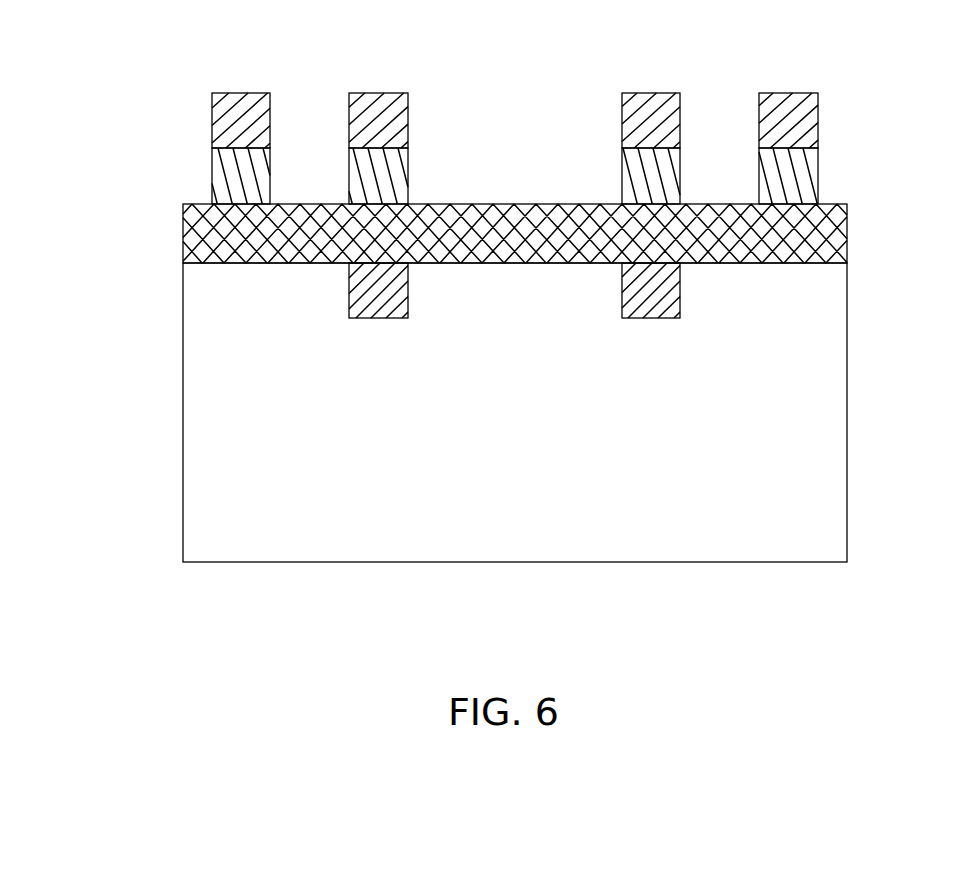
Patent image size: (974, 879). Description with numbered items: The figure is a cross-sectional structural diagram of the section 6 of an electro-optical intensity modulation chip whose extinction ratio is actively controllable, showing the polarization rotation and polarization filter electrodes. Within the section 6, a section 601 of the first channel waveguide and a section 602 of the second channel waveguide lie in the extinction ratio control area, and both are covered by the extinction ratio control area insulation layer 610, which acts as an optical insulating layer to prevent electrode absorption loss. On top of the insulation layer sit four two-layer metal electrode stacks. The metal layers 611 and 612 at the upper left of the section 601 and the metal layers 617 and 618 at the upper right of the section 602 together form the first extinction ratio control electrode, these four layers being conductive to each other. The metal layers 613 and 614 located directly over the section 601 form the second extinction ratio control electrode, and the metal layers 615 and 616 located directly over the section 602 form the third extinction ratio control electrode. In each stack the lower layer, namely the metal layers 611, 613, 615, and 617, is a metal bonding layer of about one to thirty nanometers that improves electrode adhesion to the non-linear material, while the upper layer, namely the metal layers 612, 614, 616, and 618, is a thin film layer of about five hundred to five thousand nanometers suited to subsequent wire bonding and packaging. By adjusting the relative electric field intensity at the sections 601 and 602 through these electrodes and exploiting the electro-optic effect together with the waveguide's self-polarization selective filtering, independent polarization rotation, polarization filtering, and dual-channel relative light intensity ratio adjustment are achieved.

The section 6 is at (812, 452).
The extinction ratio control area insulation layer 610 is at (813, 240).
The section of the first channel waveguide 601 is at (370, 293).
The section of the second channel waveguide 602 is at (668, 299).
The metal bonding layer 611 is at (221, 172).
The thin film layer 612 is at (222, 118).
The metal bonding layer 613 is at (402, 174).
The thin film layer 614 is at (378, 108).
The metal bonding layer 615 is at (632, 178).
The thin film layer 616 is at (653, 110).
The metal bonding layer 617 is at (805, 172).
The thin film layer 618 is at (807, 117).